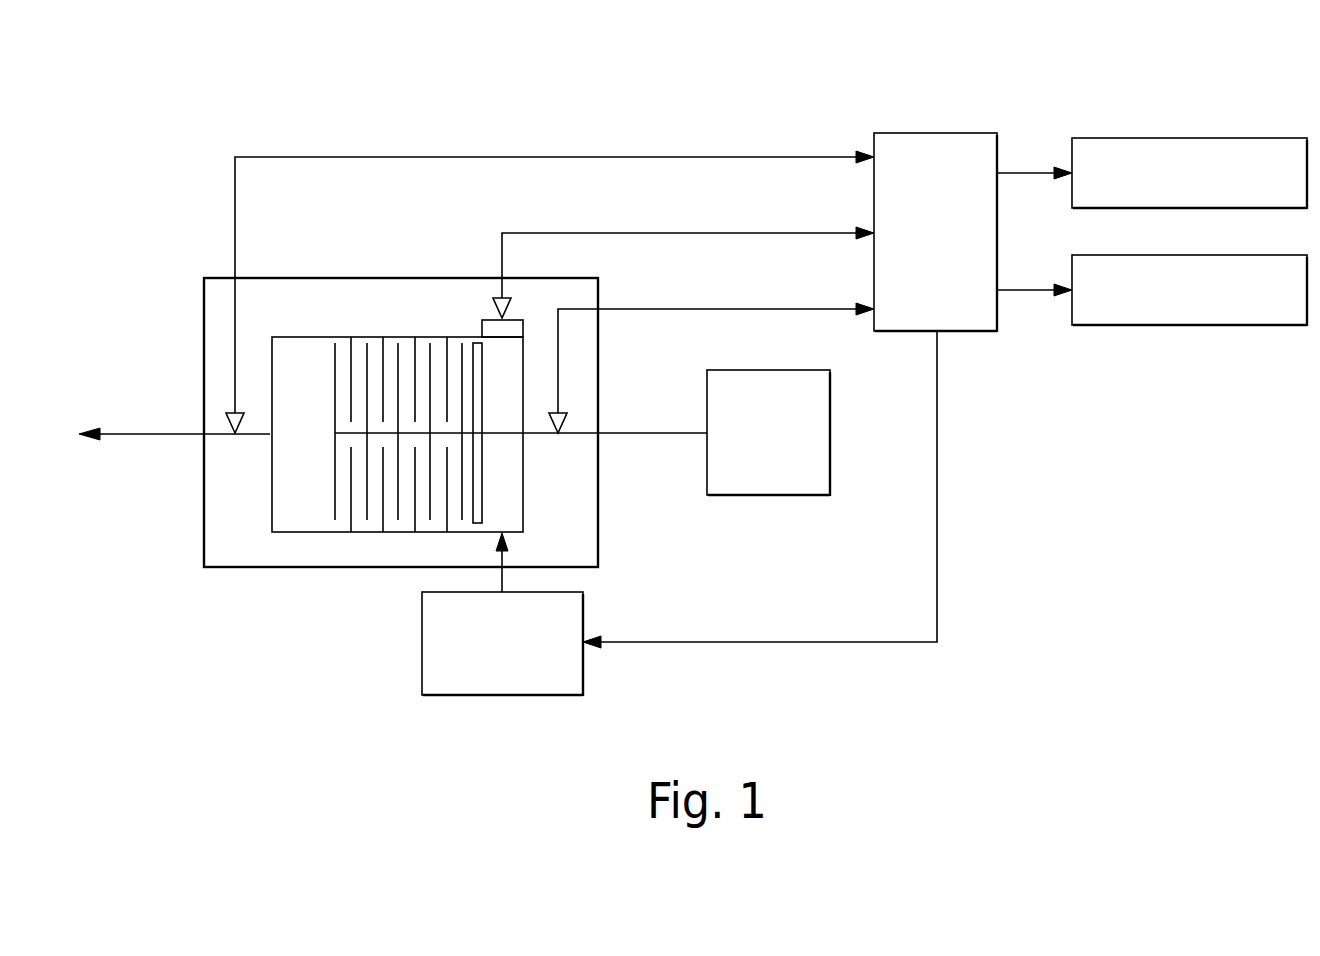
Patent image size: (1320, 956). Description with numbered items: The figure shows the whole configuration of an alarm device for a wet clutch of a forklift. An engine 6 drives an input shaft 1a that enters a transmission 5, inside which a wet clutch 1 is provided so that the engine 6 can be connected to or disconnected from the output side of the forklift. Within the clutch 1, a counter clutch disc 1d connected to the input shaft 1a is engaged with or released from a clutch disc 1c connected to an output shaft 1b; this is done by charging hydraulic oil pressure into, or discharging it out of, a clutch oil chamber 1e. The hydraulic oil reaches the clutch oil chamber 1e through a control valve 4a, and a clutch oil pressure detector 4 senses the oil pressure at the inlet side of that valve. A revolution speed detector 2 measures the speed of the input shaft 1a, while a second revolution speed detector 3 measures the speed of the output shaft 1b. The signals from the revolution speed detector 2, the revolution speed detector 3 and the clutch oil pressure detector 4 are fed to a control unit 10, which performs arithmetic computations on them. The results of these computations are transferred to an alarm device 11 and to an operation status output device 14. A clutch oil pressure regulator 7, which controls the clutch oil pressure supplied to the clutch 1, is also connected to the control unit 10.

The wet clutch 1 is at (369, 537).
The input shaft 1a is at (533, 435).
The output shaft 1b is at (125, 437).
The clutch disc 1c is at (462, 367).
The counter clutch disc 1d is at (350, 521).
The clutch oil chamber 1e is at (505, 370).
The revolution speed detector 2 is at (567, 416).
The revolution speed detector 3 is at (234, 410).
The clutch oil pressure detector 4 is at (491, 306).
The control valve 4a is at (524, 328).
The transmission 5 is at (237, 568).
The engine 6 is at (777, 497).
The clutch oil pressure regulator 7 is at (585, 682).
The control unit 10 is at (874, 186).
The alarm device 11 is at (1225, 327).
The operation status output device 14 is at (1188, 138).